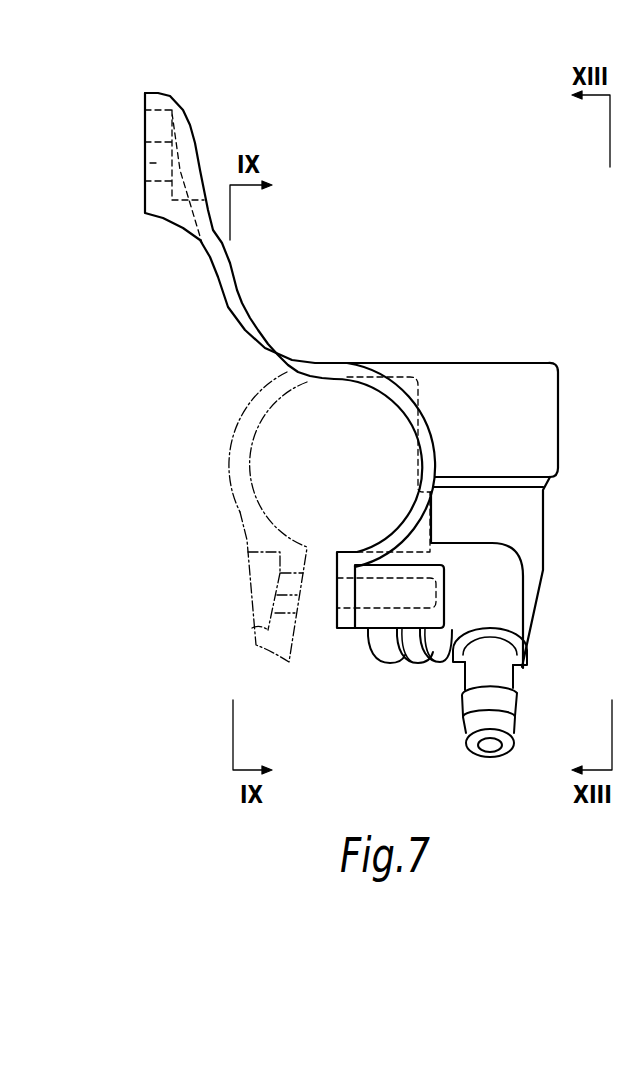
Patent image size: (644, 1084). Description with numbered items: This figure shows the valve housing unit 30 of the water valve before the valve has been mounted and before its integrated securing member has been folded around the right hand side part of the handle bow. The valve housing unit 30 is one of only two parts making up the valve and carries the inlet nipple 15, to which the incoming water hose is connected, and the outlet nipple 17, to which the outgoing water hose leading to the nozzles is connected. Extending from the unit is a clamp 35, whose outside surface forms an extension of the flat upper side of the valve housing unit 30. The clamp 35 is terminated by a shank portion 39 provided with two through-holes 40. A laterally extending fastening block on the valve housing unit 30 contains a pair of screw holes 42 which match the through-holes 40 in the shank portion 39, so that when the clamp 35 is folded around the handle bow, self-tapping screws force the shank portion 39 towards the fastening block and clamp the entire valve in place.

The valve housing unit 30 is at (458, 324).
The clamp 35 is at (262, 337).
The shank portion 39 is at (183, 110).
The through-holes 40 is at (150, 163).
The screw holes 42 is at (370, 602).
The inlet nipple 15 is at (390, 650).
The outlet nipple 17 is at (503, 705).